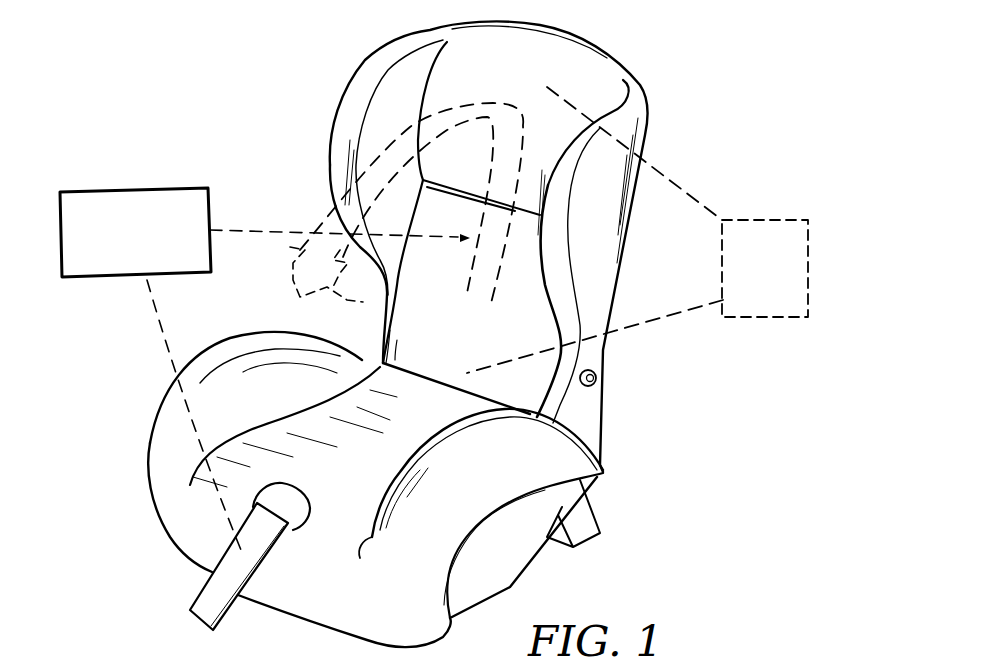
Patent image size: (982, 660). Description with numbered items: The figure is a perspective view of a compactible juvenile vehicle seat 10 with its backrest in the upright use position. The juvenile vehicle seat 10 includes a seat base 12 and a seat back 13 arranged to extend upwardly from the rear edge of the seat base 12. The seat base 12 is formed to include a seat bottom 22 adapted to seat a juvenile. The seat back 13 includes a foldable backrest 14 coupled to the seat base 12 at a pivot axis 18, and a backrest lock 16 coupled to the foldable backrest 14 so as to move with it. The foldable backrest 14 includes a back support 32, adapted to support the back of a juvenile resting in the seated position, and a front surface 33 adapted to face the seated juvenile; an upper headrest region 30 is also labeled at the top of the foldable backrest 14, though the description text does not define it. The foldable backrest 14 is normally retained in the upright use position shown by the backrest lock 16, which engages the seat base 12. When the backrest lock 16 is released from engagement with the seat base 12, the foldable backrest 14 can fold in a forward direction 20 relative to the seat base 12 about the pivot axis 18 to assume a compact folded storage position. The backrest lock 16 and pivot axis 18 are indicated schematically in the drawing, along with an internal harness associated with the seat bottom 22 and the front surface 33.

The juvenile vehicle seat 10 is at (703, 97).
The seat base 12 is at (148, 443).
The seat back 13 is at (747, 150).
The foldable backrest 14 is at (337, 80).
The backrest lock 16 is at (783, 217).
The pivot axis 18 is at (612, 384).
The forward direction 20 is at (285, 266).
The seat bottom 22 is at (312, 463).
The headrest 30 is at (587, 63).
The back support 32 is at (523, 310).
The front surface 33 is at (477, 344).